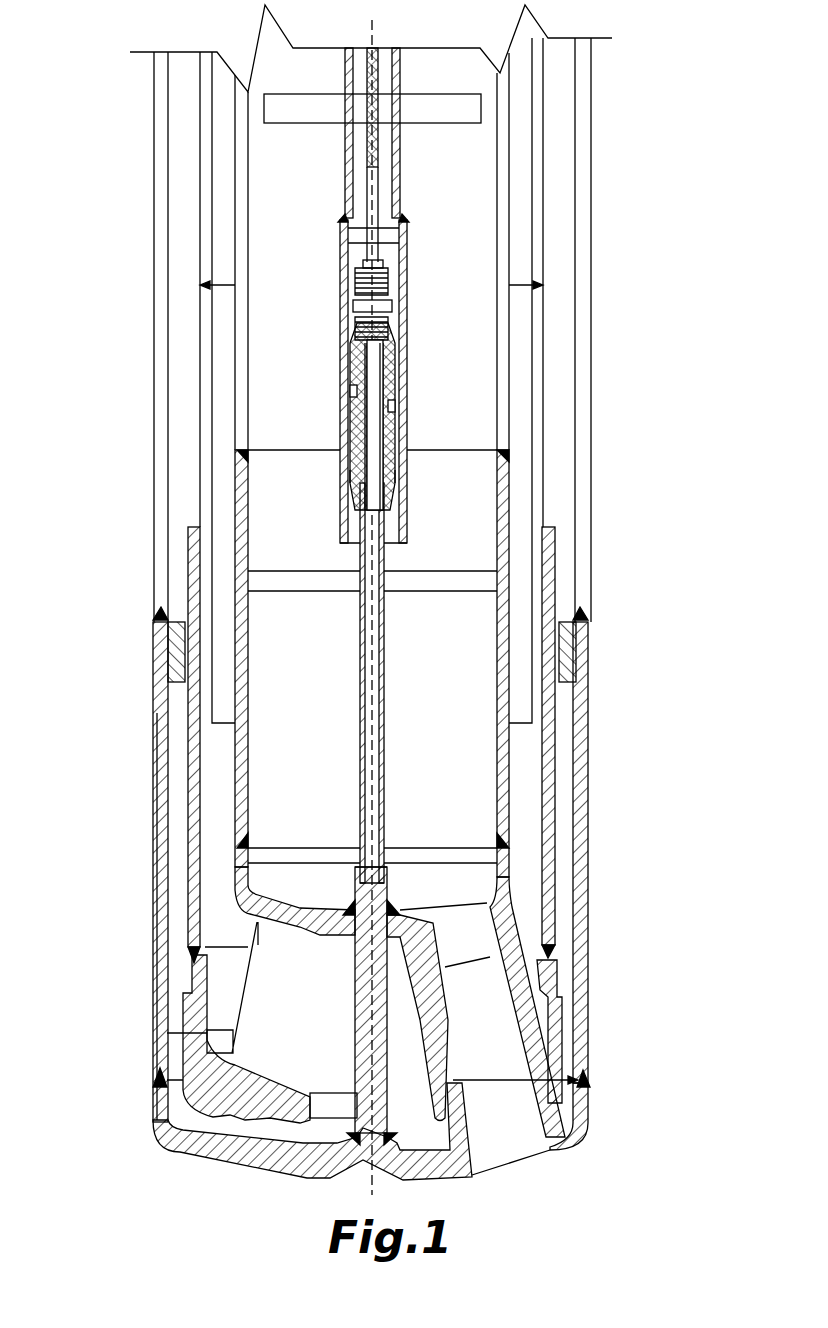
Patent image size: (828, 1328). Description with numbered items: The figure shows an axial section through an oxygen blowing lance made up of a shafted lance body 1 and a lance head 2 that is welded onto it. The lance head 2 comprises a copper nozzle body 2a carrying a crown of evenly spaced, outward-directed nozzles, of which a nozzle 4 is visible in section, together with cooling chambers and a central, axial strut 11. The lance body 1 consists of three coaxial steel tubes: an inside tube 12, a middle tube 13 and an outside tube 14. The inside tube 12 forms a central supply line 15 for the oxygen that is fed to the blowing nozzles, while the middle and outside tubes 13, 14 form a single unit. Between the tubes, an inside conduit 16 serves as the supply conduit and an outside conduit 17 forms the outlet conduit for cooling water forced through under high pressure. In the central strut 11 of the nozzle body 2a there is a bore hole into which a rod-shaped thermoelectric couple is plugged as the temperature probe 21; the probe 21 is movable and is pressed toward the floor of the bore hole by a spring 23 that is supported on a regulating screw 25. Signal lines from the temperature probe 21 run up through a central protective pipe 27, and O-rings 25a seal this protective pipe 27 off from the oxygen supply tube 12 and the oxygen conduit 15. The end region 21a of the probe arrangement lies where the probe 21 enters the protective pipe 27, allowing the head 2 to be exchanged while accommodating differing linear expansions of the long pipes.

The lance body 1 is at (127, 775).
The lance head 2 is at (143, 1152).
The nozzle body 2a is at (578, 1100).
The nozzle 4 is at (513, 1130).
The central axial strut 11 is at (400, 1060).
The inside tube 12 is at (237, 653).
The middle tube 13 is at (200, 748).
The outside tube 14 is at (153, 847).
The central supply line 15 is at (283, 708).
The inside conduit 16 is at (213, 865).
The outside conduit 17 is at (177, 973).
The temperature probe 21 is at (370, 1040).
The stem end 21a is at (358, 438).
The spring 23 is at (356, 322).
The regulating screw 25 is at (400, 367).
The O-rings 25a is at (400, 400).
The central protective pipe 27 is at (346, 143).